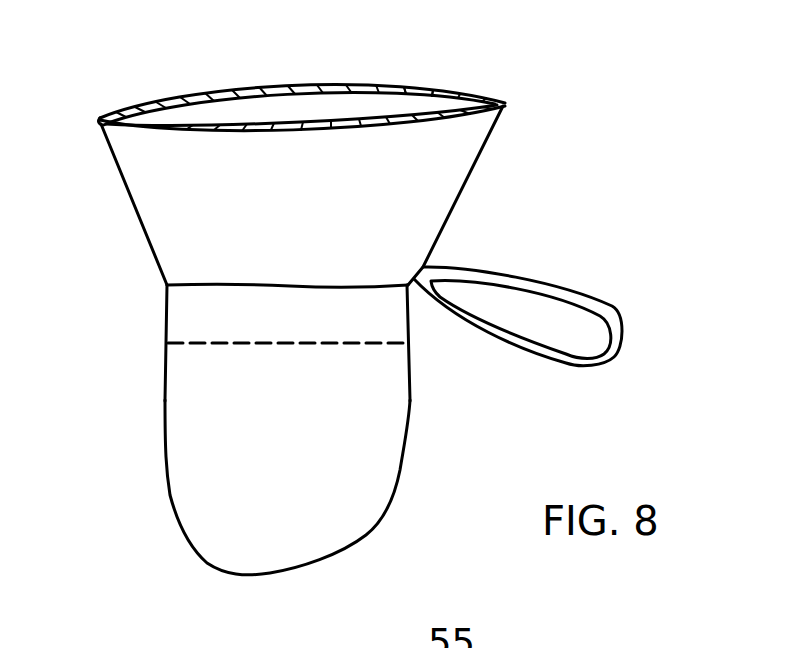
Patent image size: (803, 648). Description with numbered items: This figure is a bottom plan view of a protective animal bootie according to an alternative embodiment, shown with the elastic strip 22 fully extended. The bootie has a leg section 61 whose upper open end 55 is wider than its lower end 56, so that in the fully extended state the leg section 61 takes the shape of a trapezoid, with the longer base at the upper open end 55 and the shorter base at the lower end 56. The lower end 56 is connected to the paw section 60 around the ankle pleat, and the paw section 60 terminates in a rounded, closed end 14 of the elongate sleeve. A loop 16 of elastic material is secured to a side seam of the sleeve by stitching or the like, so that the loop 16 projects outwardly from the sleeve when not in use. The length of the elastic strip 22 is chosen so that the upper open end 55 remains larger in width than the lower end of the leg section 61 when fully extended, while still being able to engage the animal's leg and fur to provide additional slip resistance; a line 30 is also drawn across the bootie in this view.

The closed end 14 is at (263, 577).
The loop 16 is at (628, 323).
The elastic strip 22 is at (503, 101).
The fold line 30 is at (157, 317).
The upper open end 55 is at (405, 83).
The lower end 56 is at (193, 279).
The paw section 60 is at (417, 440).
The leg section 61 is at (477, 184).